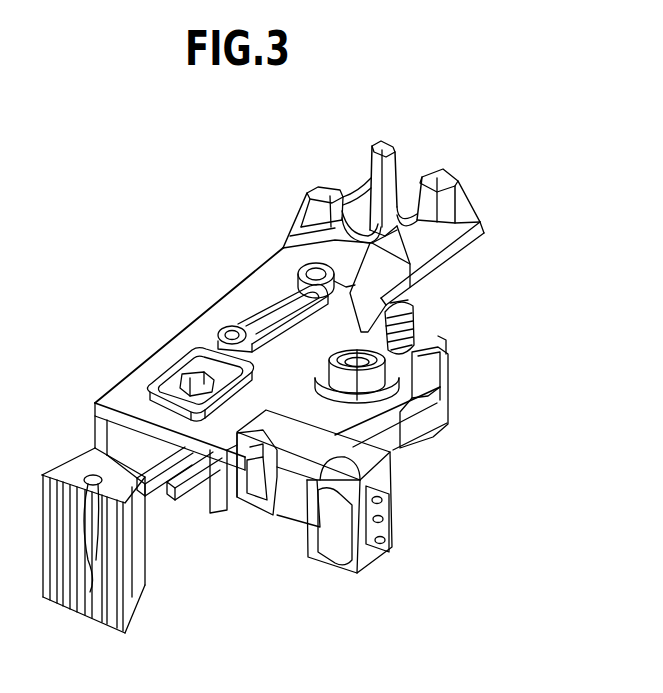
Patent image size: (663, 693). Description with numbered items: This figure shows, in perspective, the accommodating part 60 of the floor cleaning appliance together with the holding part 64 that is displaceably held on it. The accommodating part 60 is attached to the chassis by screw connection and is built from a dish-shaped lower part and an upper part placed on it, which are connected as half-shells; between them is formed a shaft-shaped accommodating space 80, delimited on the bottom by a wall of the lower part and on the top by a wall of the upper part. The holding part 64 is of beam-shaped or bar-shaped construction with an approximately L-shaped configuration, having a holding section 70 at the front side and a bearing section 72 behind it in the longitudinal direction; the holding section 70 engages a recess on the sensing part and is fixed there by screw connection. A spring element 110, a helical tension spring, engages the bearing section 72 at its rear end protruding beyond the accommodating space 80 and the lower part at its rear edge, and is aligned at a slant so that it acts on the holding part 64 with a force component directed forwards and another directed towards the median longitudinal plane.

The accommodating part 60 is at (126, 340).
The holding part 64 is at (117, 455).
The holding section 70 is at (133, 577).
The bearing section 72 is at (200, 386).
The accommodating space 80 is at (188, 503).
The spring element 110 is at (411, 309).